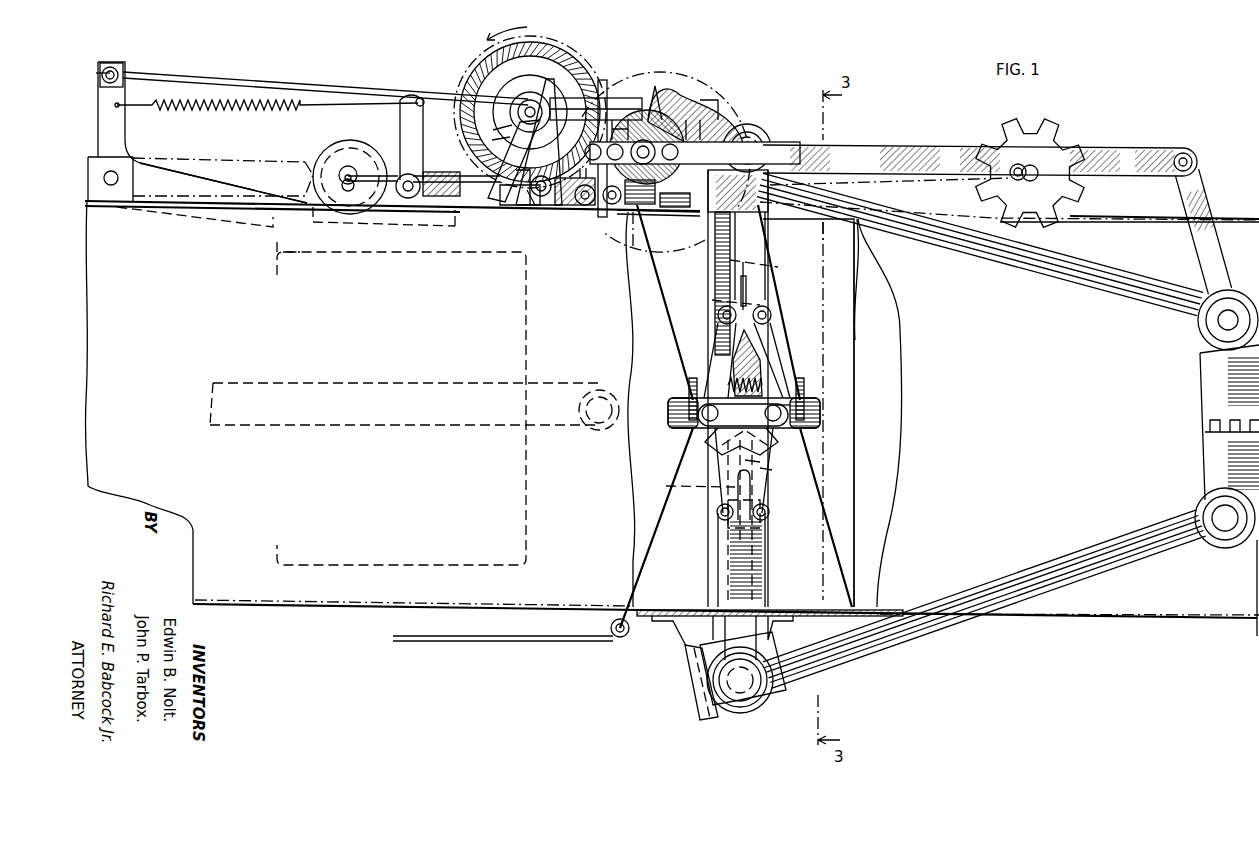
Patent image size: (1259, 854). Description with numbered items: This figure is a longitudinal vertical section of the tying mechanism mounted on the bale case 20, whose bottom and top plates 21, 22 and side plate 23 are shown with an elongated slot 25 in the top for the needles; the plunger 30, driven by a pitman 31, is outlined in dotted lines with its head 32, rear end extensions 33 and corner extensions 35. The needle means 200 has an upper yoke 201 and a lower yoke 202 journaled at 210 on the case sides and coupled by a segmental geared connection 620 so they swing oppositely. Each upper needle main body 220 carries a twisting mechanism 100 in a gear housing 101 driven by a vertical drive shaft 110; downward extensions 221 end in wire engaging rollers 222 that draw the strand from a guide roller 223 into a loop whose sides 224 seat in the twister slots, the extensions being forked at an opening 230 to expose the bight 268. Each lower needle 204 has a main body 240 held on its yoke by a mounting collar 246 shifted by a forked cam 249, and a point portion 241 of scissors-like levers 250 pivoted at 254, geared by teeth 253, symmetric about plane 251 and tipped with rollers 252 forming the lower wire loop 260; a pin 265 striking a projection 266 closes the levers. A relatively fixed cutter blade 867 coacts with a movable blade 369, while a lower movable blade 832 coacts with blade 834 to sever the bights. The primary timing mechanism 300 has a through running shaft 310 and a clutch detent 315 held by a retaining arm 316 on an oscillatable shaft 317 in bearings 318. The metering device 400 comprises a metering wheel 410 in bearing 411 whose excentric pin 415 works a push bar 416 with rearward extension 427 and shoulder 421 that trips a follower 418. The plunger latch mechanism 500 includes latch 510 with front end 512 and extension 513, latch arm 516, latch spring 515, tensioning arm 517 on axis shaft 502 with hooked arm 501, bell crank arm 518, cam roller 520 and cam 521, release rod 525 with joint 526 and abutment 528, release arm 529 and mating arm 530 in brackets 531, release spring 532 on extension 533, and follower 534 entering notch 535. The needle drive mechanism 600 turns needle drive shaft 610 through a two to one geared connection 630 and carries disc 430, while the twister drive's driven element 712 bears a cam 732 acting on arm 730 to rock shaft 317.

The bale case 20 is at (290, 605).
The bottom plate 21 is at (345, 607).
The top plate 22 is at (230, 206).
The side plate 23 is at (1009, 397).
The elongated slot 25 is at (834, 231).
The plunger 30 is at (526, 312).
The connecting rod or pitman 31 is at (422, 434).
The plunger head 32 is at (862, 329).
The rear end extensions 33 is at (277, 258).
The corner extensions 35 is at (883, 267).
The twisting mechanism 100 is at (823, 419).
The gear housing 101 is at (800, 396).
The drive shaft 110 is at (768, 261).
The needle means 200 is at (775, 249).
The upper needle yoke 201 is at (1022, 272).
The lower needle yoke 202 is at (995, 578).
The lower needle 204 is at (770, 565).
The yoke journal 210 is at (1220, 323).
The upper needle main body 220 is at (718, 283).
The downward extension 221 is at (772, 468).
The wire engaging roller 222 is at (717, 512).
The guide roller 223 is at (638, 244).
The wire loop sides 224 is at (668, 293).
The fork opening 230 is at (687, 486).
The lower needle main body 240 is at (750, 460).
The lower needle point portion 241 is at (712, 361).
The mounting collar 246 is at (748, 712).
The forked cam 249 is at (690, 682).
The scissors-like lever 250 is at (780, 340).
The transverse plane of symmetry 251 is at (712, 268).
The wire engaging roller 252 is at (769, 307).
The meshing teeth 253 is at (790, 381).
The lever pivot 254 is at (700, 403).
The lower wire loop 260 is at (660, 516).
The pin 265 is at (705, 440).
The projection 266 is at (712, 426).
The bight 268 is at (720, 300).
The primary timing mechanism 300 is at (503, 21).
The through running shaft 310 is at (466, 109).
The clutch controlling detent 315 is at (520, 206).
The retaining arm 316 is at (534, 212).
The oscillatable shaft 317 is at (582, 211).
The bearings 318 is at (548, 207).
The stop 369 is at (746, 290).
The metering device 400 is at (952, 129).
The metering wheel 410 is at (1050, 136).
The bearing 411 is at (1070, 177).
The excentric pin 415 is at (1022, 165).
The push bar 416 is at (873, 187).
The follower 418 is at (590, 64).
The shoulder 421 is at (656, 90).
The rearward extension 427 is at (630, 78).
The disc 430 is at (690, 110).
The plunger latch mechanism 500 is at (244, 139).
The hooked arm 501 is at (467, 163).
The axis shaft 502 is at (405, 196).
The latch 510 is at (220, 184).
The latch front end 512 is at (272, 226).
The front extension 513 is at (308, 176).
The latch spring 515 is at (200, 103).
The latch arm 516 is at (125, 128).
The spring tensioning arm 517 is at (430, 98).
The bell crank arm 518 is at (360, 160).
The cam roller 520 is at (325, 168).
The roller operating cam 521 is at (411, 227).
The latch release rod 525 is at (313, 83).
The joint 526 is at (125, 67).
The abutment 528 is at (570, 83).
The latch release arm 529 is at (602, 80).
The mating arm 530 is at (618, 212).
The bale case brackets 531 is at (592, 207).
The release spring 532 is at (560, 212).
The release arm extension 533 is at (518, 194).
The follower 534 is at (640, 230).
The notch 535 is at (706, 100).
The needle drive mechanism 600 is at (662, 29).
The needle drive shaft 610 is at (714, 110).
The segmental geared connection 620 is at (1190, 415).
The two to one geared connection 630 is at (722, 90).
The driven element 712 is at (484, 56).
The arm 730 is at (470, 152).
The cam 732 is at (470, 139).
The lower movable blade 832 is at (766, 500).
The cutter blade 834 is at (762, 540).
The relatively fixed cutter blade 867 is at (720, 322).